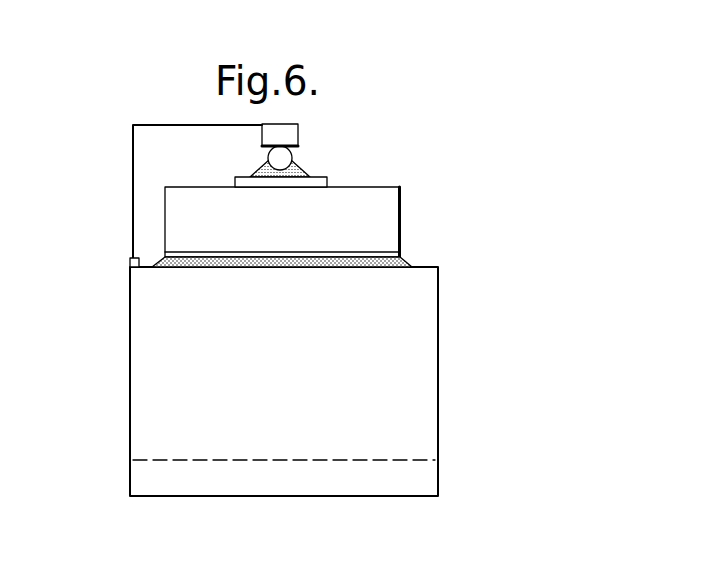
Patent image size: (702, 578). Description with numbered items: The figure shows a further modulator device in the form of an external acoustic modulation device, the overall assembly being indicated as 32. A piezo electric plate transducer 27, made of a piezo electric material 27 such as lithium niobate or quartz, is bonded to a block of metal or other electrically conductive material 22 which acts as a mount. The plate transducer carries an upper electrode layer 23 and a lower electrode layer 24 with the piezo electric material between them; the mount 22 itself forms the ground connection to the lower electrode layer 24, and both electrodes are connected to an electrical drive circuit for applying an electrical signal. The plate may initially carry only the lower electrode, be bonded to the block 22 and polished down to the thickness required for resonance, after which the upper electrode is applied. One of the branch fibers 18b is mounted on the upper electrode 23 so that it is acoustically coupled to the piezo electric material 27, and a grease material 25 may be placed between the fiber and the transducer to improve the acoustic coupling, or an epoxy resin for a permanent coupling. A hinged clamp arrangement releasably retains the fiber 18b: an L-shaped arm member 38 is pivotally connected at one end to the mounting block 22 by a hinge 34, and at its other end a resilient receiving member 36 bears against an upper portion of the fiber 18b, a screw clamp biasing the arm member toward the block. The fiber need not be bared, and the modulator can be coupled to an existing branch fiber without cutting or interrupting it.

The branch fiber 18b is at (257, 163).
The block of electrically conductive material 22 is at (430, 331).
The upper electrode layer 23 is at (331, 181).
The lower electrode layer 24 is at (391, 256).
The grease material 25 is at (299, 165).
The piezo electric plate transducer 27 is at (400, 208).
The sensor assembly 32 is at (488, 436).
The hinge 34 is at (130, 263).
The receiving member 36 is at (298, 132).
The L-shaped arm member 38 is at (133, 159).